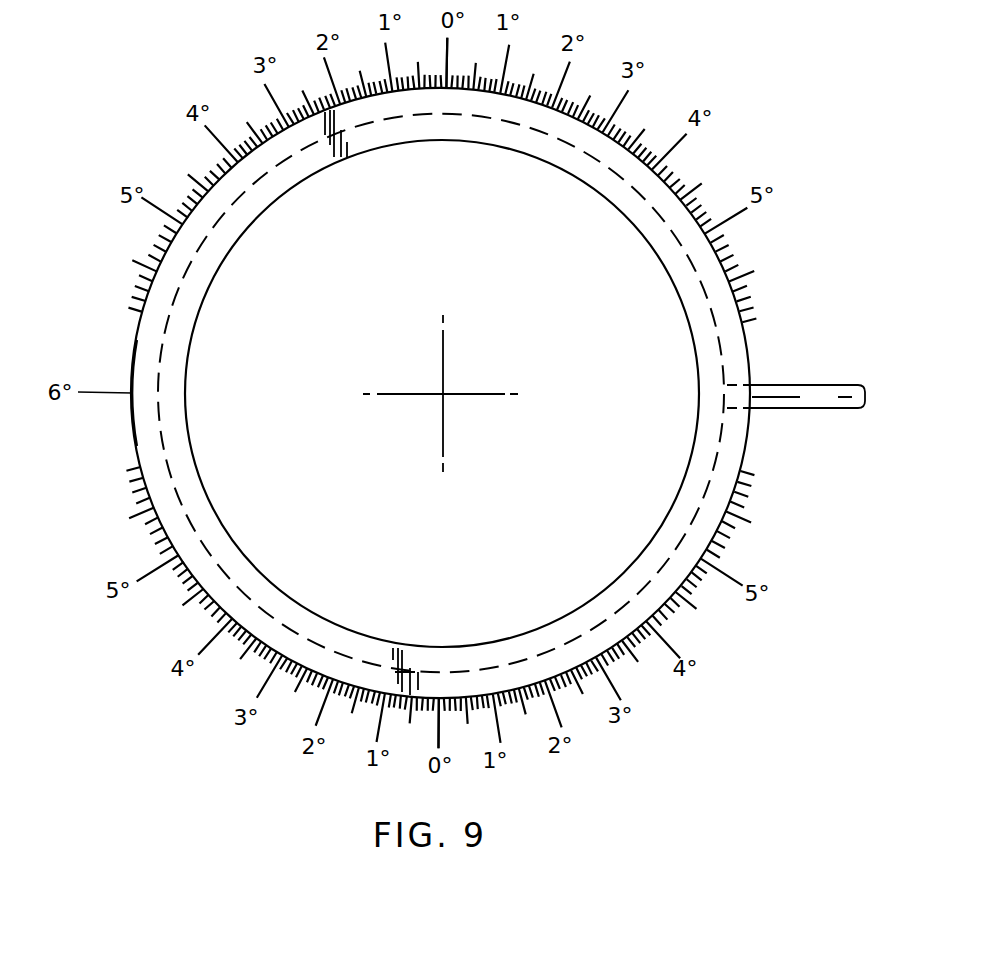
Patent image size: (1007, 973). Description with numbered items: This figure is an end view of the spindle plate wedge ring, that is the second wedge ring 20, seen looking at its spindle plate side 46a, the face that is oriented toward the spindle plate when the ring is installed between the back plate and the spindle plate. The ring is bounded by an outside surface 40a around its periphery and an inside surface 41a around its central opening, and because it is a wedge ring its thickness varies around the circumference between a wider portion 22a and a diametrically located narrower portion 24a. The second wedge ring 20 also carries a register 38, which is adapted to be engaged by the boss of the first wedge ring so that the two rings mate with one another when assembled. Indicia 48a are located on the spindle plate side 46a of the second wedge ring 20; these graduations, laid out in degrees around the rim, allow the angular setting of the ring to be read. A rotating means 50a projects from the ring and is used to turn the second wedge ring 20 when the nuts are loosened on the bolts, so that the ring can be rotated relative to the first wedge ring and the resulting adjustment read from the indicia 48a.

The second wedge ring 20 is at (128, 450).
The wider portion 22a is at (752, 385).
The narrower portion 24a is at (132, 405).
The register 38 is at (178, 502).
The outside surface 40a is at (752, 410).
The inside surface 41a is at (233, 545).
The spindle plate side 46a is at (313, 630).
The indicia 48a is at (665, 152).
The rotating means 50a is at (852, 388).